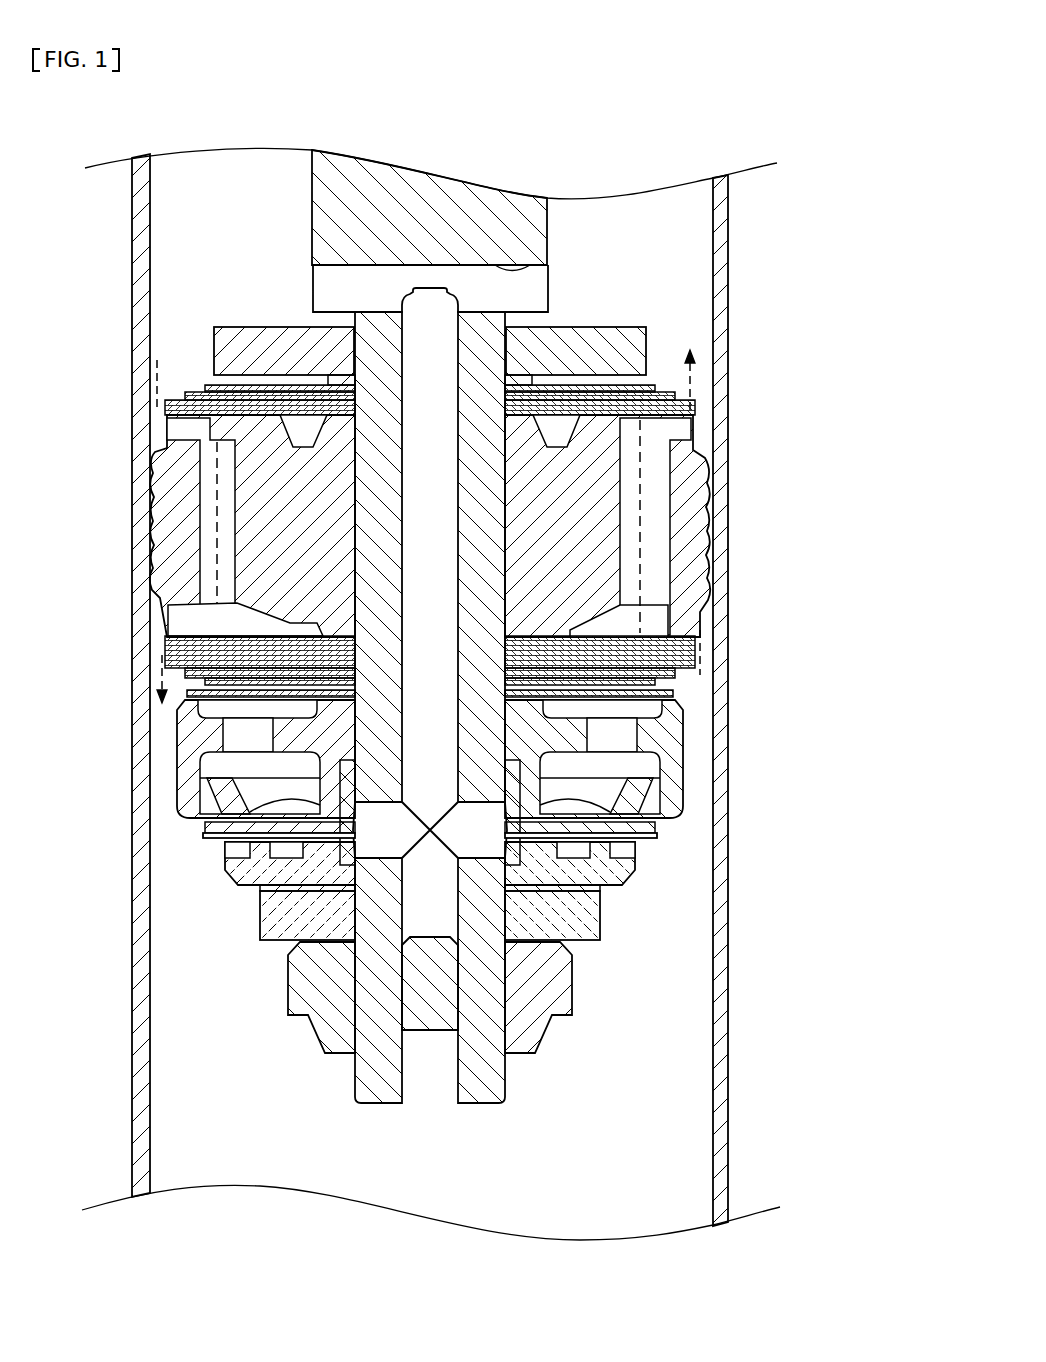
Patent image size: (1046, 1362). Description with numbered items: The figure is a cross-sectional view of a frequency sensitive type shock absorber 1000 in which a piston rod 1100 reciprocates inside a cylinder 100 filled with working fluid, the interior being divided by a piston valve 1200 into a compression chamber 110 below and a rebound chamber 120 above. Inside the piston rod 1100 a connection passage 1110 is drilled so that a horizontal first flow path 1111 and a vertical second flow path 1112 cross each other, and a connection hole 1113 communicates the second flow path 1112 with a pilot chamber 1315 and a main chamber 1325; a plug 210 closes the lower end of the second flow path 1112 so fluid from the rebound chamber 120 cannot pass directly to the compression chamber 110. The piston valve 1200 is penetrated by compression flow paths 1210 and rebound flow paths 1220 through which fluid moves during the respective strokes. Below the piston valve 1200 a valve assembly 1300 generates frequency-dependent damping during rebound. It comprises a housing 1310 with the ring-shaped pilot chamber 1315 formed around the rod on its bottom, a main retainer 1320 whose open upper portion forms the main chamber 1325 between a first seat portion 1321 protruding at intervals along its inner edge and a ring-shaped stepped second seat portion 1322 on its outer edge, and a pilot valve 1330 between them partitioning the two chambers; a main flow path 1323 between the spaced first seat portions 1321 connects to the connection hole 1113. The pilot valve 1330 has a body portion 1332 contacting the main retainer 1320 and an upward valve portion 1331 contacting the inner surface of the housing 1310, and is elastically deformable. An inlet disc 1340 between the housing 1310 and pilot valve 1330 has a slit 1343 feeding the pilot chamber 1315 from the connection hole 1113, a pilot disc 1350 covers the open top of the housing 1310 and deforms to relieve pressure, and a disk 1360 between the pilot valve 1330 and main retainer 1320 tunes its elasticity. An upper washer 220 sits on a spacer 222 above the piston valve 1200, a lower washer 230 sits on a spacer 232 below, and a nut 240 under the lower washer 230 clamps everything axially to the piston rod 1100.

The frequency sensitive type shock absorber 1000 is at (100, 237).
The cylinder 100 is at (722, 245).
The compression chamber 110 is at (250, 1058).
The rebound chamber 120 is at (232, 237).
The piston rod 1100 is at (312, 170).
The connection passage 1110 is at (620, 228).
The first flow path 1111 is at (522, 266).
The second flow path 1112 is at (452, 345).
The connection hole 1113 is at (506, 812).
The piston valve 1200 is at (170, 493).
The compression flow paths 1210 is at (650, 494).
The rebound flow paths 1220 is at (205, 527).
The valve assembly 1300 is at (178, 735).
The housing 1310 is at (673, 731).
The pilot chamber 1315 is at (603, 770).
The main retainer 1320 is at (800, 850).
The first seat portion 1321 is at (600, 876).
The second seat portion 1322 is at (638, 858).
The main flow path 1323 is at (560, 886).
The main chamber 1325 is at (268, 846).
The pilot valve 1330 is at (800, 786).
The valve portion 1331 is at (640, 800).
The body portion 1332 is at (655, 826).
The inlet disc 1340 is at (205, 835).
The slit 1343 is at (338, 819).
The pilot disc 1350 is at (668, 693).
The disk 1360 is at (232, 842).
The plug 210 is at (430, 1030).
The upper washer 220 is at (214, 340).
The spacer 222 is at (330, 379).
The lower washer 230 is at (270, 922).
The spacer 232 is at (340, 888).
The nut 240 is at (300, 986).